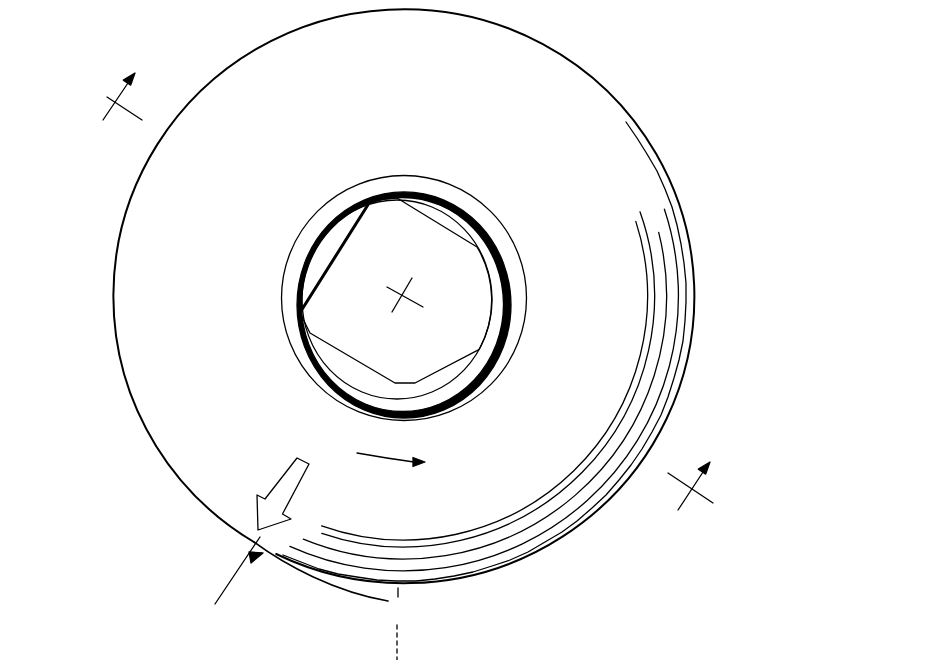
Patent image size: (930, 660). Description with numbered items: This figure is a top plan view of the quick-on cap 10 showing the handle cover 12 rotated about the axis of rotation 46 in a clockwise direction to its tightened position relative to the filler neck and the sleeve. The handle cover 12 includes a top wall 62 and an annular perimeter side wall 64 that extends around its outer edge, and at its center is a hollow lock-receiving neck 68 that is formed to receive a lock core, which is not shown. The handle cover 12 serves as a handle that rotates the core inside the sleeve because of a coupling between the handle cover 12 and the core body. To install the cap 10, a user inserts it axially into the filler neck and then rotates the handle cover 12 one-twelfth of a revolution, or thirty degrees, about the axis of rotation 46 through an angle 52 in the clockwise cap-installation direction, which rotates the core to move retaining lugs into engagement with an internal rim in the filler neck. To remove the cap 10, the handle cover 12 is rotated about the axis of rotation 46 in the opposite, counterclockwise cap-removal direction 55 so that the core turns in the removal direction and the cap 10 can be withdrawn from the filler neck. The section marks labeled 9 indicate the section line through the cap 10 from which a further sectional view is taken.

The quick-on cap 10 is at (690, 158).
The handle cover 12 is at (594, 112).
The axis of rotation 46 is at (407, 296).
The angle 52 is at (303, 583).
The cap-removal direction 55 is at (393, 462).
The top wall 62 is at (648, 373).
The annular perimeter side wall 64 is at (563, 522).
The hollow lock-receiving neck 68 is at (508, 367).
The section line 9- 9 is at (395, 314).